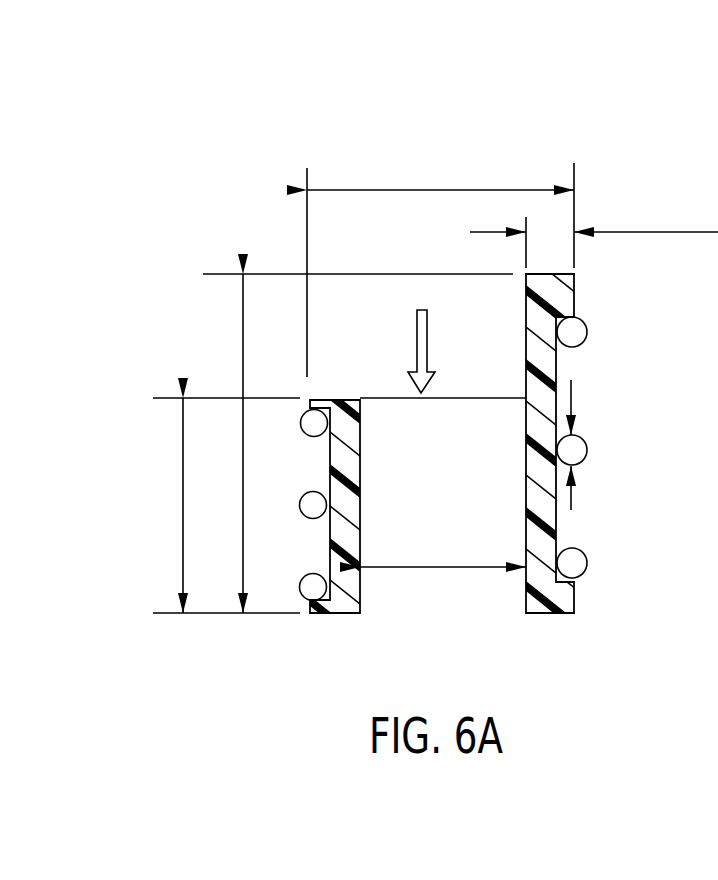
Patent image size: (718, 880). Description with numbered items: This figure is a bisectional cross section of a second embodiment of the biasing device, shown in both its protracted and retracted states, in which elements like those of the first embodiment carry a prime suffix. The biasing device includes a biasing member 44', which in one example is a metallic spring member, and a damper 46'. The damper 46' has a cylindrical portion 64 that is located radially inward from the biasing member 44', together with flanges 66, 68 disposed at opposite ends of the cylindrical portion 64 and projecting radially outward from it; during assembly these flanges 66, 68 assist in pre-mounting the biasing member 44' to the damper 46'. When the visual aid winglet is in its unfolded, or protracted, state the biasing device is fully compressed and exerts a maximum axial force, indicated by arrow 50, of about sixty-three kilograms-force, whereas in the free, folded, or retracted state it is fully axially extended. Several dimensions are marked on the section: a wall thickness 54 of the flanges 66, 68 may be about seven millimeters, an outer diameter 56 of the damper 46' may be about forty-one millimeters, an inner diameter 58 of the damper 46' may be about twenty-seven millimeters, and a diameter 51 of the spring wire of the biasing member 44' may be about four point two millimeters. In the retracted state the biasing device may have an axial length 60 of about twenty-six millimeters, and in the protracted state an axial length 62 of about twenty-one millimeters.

The biasing member 44' is at (608, 447).
The damper 46' is at (518, 457).
The arrow 50 is at (472, 318).
The diameter 51 is at (627, 483).
The wall thickness 54 is at (673, 293).
The outer diameter 56 is at (352, 188).
The inner diameter 58 is at (448, 632).
The axial length 60 is at (243, 342).
The axial length 62 is at (183, 557).
The cylindrical portion 64 is at (402, 442).
The flange 66 is at (367, 662).
The flange 68 is at (350, 397).